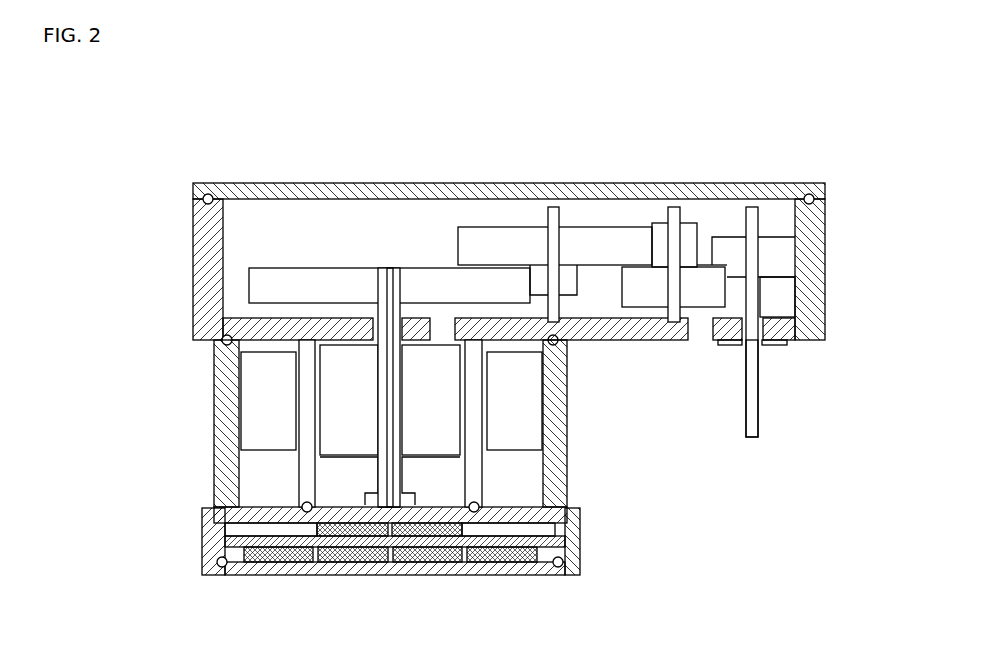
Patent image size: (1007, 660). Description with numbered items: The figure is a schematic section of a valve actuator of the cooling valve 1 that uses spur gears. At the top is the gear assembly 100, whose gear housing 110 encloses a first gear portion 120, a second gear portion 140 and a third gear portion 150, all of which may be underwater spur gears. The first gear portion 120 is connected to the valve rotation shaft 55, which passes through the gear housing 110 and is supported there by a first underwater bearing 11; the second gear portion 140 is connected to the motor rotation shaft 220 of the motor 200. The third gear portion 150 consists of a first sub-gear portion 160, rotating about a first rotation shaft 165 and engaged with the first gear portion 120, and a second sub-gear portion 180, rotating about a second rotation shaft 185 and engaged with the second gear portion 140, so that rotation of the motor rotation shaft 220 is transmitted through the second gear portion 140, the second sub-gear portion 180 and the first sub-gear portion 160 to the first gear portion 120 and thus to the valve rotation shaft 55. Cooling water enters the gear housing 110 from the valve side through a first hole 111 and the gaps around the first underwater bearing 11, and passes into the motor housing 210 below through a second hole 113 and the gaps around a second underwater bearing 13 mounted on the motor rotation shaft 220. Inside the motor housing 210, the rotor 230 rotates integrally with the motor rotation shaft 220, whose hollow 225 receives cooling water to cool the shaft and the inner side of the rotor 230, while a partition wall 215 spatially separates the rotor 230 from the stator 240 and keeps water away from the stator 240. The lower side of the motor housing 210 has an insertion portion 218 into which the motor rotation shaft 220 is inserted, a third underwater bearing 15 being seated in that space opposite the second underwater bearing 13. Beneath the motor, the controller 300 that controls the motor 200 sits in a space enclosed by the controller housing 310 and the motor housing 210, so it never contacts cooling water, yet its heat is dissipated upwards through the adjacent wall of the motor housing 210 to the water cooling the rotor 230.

The cooling valve 1 is at (846, 139).
The gear assembly 100 is at (577, 270).
The gear housing 110 is at (815, 272).
The first hole 111 is at (707, 345).
The first underwater bearing 11 is at (777, 345).
The second hole 113 is at (453, 318).
The first gear portion 120 is at (775, 243).
The second gear portion 140 is at (438, 275).
The third gear portion 150 is at (592, 195).
The first sub-gear portion 160 is at (655, 235).
The first rotation shaft 165 is at (675, 207).
The second sub-gear portion 180 is at (592, 238).
The second rotation shaft 185 is at (553, 208).
The valve rotation shaft 55 is at (757, 420).
The motor 200 is at (352, 361).
The motor housing 210 is at (560, 487).
The second underwater bearing 13 is at (355, 348).
The third underwater bearing 15 is at (352, 458).
The partition wall 215 is at (475, 433).
The insertion portion 218 is at (410, 497).
The motor rotation shaft 220 is at (399, 270).
The hollow 225 is at (390, 268).
The rotor 230 is at (443, 448).
The stator 240 is at (530, 386).
The controller 300 is at (272, 542).
The controller housing 310 is at (212, 550).